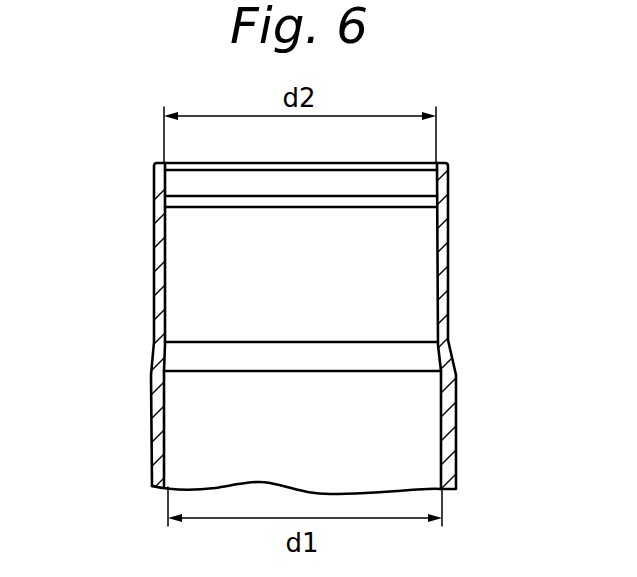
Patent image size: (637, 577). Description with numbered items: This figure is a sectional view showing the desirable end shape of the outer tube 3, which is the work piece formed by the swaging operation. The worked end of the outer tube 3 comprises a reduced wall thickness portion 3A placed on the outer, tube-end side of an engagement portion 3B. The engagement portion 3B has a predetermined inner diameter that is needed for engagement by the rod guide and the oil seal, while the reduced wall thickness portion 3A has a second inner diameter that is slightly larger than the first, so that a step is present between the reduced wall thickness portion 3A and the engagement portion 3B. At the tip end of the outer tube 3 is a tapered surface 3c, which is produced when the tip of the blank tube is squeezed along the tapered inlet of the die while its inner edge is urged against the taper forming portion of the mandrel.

The outer tube 3 is at (297, 288).
The reduced wall thickness portion 3A is at (448, 187).
The engagement portion 3B is at (448, 247).
The tapered surface 3c is at (166, 211).